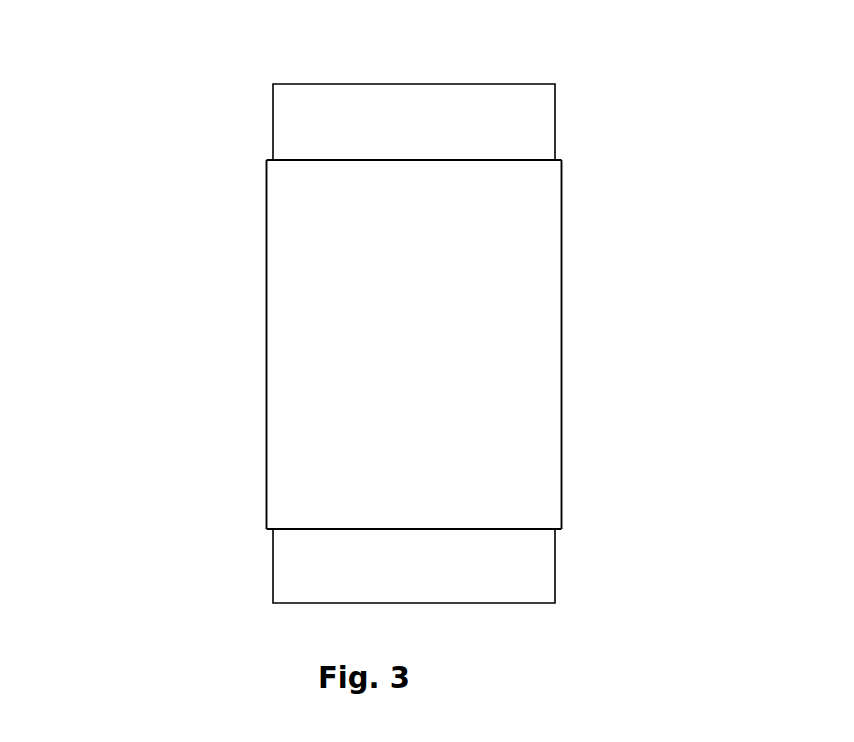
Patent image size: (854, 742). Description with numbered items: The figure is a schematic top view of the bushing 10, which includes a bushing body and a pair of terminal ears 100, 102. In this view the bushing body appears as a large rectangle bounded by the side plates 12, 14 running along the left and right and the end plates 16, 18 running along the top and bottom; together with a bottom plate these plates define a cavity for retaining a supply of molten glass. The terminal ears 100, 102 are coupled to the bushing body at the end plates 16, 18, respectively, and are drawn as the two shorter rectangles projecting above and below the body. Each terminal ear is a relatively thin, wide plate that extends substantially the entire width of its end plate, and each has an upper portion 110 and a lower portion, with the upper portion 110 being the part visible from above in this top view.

The bushing 10 is at (407, 310).
The side plate 12 is at (265, 325).
The side plate 14 is at (562, 392).
The end plate 16 is at (488, 160).
The end plate 18 is at (322, 528).
The terminal ear 100 is at (455, 88).
The terminal ear 102 is at (525, 566).
The upper portion 110 is at (450, 107).